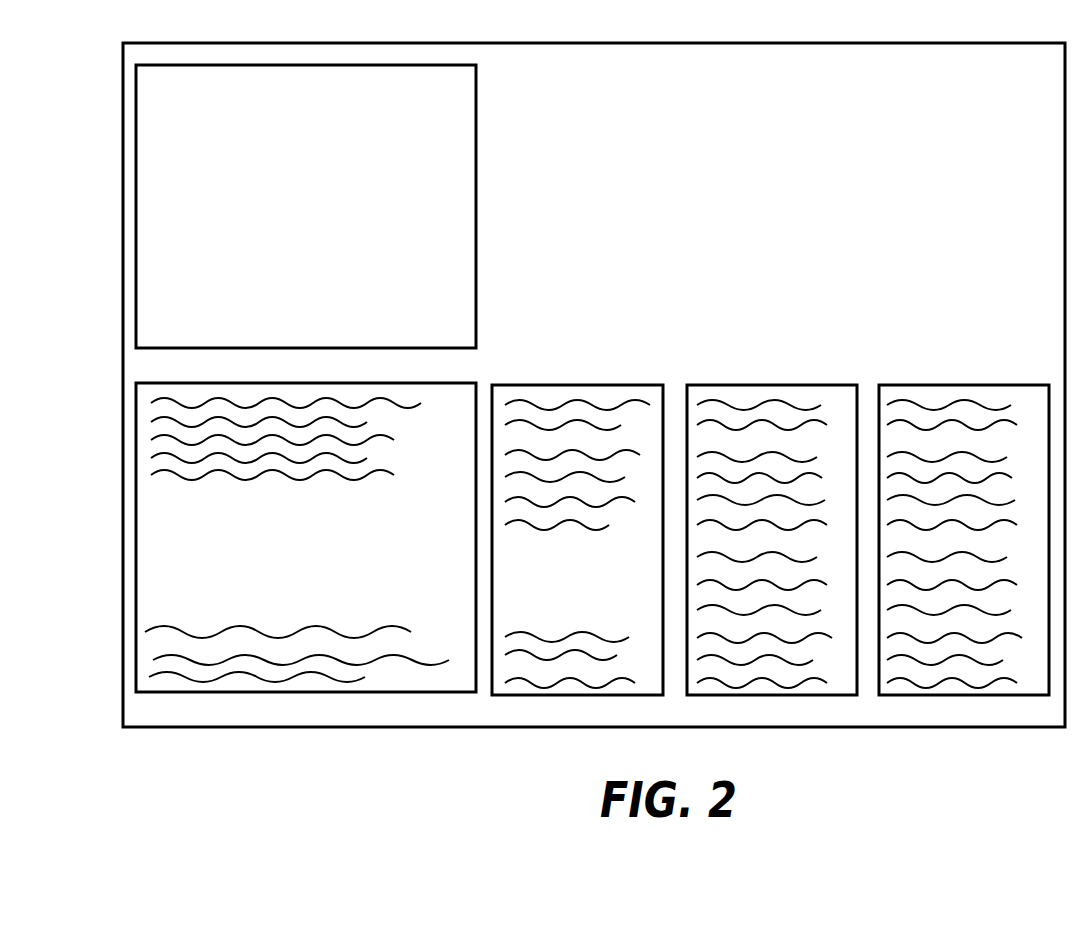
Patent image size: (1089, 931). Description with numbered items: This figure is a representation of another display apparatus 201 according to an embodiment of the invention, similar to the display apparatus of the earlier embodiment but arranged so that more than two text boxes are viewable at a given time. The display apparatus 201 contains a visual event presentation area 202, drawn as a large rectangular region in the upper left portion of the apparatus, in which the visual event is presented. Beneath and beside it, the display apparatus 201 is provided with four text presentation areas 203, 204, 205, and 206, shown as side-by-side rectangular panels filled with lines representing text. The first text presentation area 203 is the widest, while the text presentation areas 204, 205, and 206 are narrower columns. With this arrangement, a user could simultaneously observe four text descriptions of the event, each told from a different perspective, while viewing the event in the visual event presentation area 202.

The display apparatus 201 is at (122, 530).
The visual event presentation area 202 is at (152, 186).
The text presentation area 203 is at (277, 693).
The text presentation area 204 is at (571, 693).
The text presentation area 205 is at (765, 693).
The text presentation area 206 is at (948, 693).